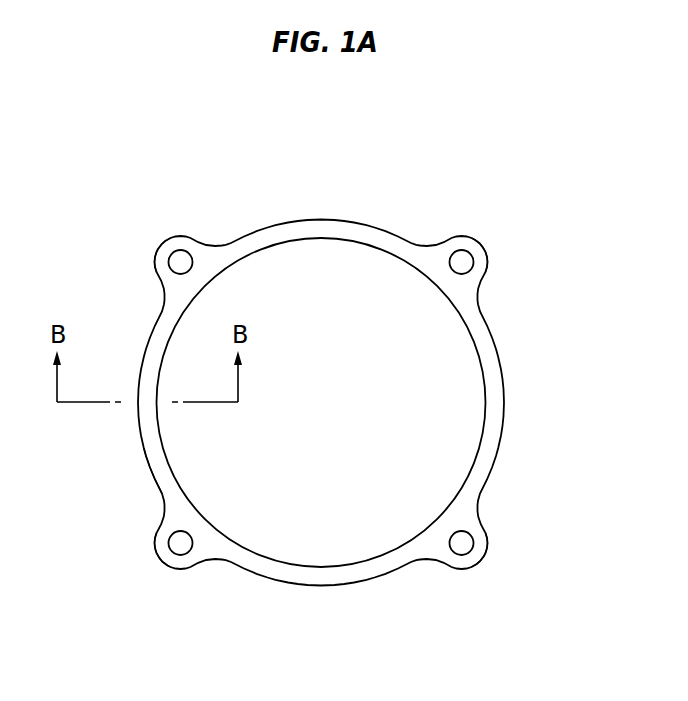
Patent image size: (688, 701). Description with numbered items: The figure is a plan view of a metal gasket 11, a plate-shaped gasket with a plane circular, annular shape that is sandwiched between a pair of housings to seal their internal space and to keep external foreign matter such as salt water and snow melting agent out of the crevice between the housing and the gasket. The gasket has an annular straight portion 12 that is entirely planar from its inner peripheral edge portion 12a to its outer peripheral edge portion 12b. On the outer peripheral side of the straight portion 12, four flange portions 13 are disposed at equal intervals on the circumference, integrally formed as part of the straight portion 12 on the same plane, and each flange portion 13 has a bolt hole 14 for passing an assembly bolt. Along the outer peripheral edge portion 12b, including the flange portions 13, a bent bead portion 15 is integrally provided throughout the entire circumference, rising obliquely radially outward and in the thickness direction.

The metal gasket 11 is at (417, 228).
The straight portion 12 is at (152, 428).
The inner peripheral edge portion 12a is at (482, 413).
The outer peripheral edge portion 12b is at (505, 413).
The flange portion 13 is at (168, 247).
The bolt hole 14 is at (181, 263).
The bent bead portion 15 is at (150, 470).